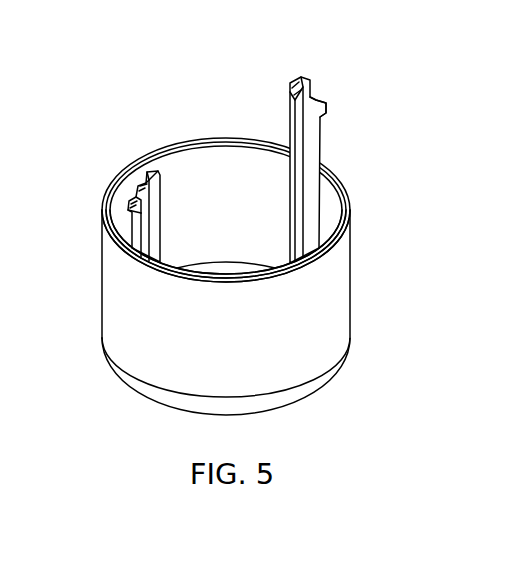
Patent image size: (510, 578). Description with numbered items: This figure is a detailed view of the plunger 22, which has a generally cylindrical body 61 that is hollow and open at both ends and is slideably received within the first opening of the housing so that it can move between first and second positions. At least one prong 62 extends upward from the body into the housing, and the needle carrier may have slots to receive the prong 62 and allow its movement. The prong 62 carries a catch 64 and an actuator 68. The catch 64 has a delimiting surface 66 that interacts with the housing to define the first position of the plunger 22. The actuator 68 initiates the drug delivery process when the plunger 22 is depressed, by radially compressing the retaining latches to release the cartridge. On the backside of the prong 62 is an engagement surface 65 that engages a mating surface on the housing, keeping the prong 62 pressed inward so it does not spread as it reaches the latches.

The plunger 22 is at (244, 222).
The cylindrical cup body 61 is at (105, 293).
The prong 62 is at (342, 146).
The catch 64 is at (112, 184).
The engagement surface 65 is at (326, 93).
The delimiting surface 66 is at (329, 113).
The actuator 68 is at (152, 171).